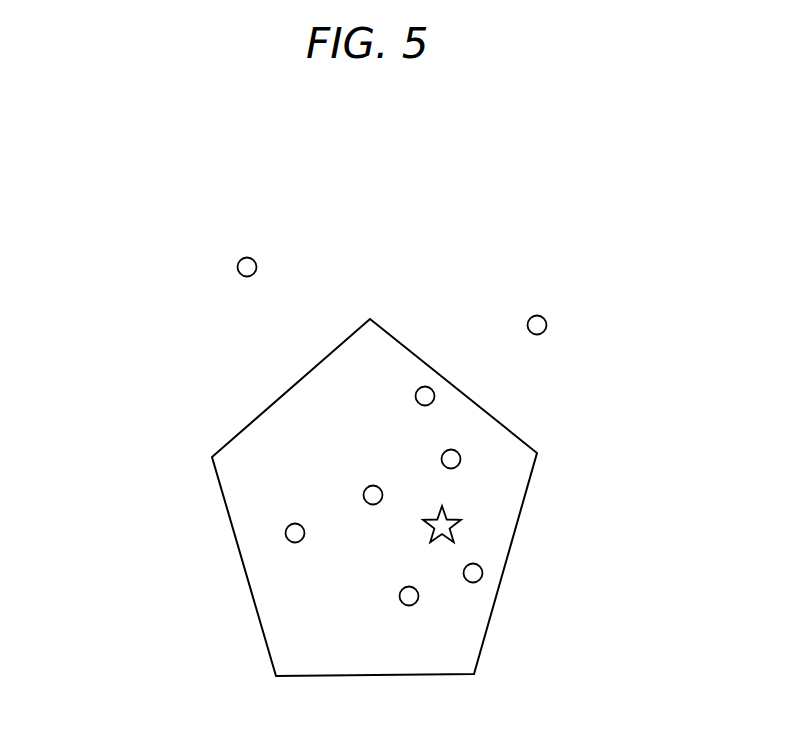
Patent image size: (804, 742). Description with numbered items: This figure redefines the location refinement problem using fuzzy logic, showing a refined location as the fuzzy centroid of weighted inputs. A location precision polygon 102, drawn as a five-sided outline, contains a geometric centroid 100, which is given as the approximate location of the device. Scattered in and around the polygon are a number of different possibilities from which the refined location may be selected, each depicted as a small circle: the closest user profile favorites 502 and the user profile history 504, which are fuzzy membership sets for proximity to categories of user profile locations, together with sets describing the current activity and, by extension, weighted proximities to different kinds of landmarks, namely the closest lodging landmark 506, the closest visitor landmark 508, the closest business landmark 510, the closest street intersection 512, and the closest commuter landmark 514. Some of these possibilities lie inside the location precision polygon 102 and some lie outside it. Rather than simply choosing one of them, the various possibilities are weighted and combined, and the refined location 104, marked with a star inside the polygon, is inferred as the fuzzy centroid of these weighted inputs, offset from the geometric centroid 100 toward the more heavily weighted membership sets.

The geometric centroid 100 is at (377, 485).
The location precision polygon 102 is at (410, 347).
The refined location 104 is at (460, 515).
The closest user profile favorites 502 is at (237, 272).
The user profile history 504 is at (548, 324).
The closest lodging landmark 506 is at (435, 393).
The closest visitor landmark 508 is at (460, 458).
The closest business landmark 510 is at (482, 573).
The closest street intersection 512 is at (418, 598).
The closest commuter landmark 514 is at (292, 545).